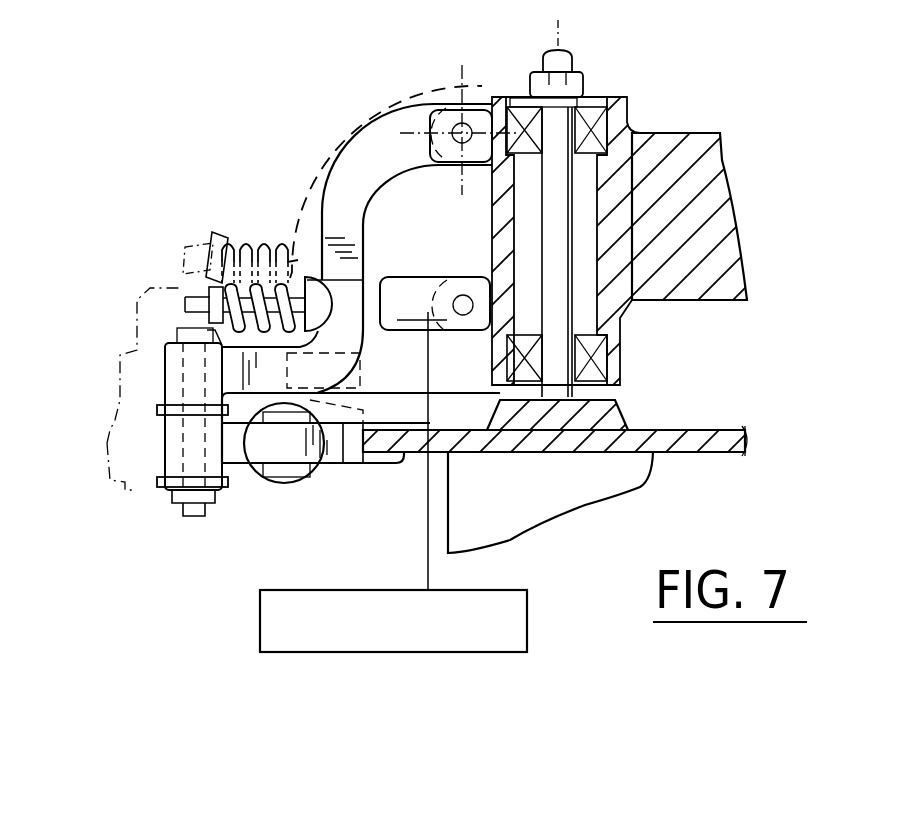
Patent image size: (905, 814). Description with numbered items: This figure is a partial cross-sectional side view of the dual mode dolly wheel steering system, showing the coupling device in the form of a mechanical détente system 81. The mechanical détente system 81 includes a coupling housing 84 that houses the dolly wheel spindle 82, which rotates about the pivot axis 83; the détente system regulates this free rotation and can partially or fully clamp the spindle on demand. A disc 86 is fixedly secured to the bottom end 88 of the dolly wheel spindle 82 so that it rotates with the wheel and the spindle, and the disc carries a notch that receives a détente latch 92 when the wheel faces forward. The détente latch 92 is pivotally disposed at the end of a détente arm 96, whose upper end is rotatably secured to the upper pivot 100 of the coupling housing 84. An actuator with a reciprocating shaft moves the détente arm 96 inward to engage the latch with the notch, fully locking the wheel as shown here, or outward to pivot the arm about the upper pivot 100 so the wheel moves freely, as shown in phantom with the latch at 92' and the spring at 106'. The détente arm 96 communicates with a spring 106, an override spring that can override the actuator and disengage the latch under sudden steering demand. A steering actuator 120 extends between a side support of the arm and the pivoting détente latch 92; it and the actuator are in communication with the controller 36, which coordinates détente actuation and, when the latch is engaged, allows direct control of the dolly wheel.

The controller 36 is at (398, 652).
The mechanical détente system 81 is at (360, 86).
The dolly wheel spindle 82 is at (567, 190).
The pivot axis 83 is at (558, 47).
The coupling housing 84 is at (625, 100).
The disc 86 is at (718, 430).
The bottom end 88 is at (563, 392).
The détente latch 92 is at (361, 459).
The détente latch (phantom position) 92' is at (288, 468).
The détente arm 96 is at (420, 118).
The upper pivot 100 is at (470, 115).
The spring 106 is at (222, 286).
The spring (phantom position) 106' is at (227, 229).
The steering actuator 120 is at (253, 467).